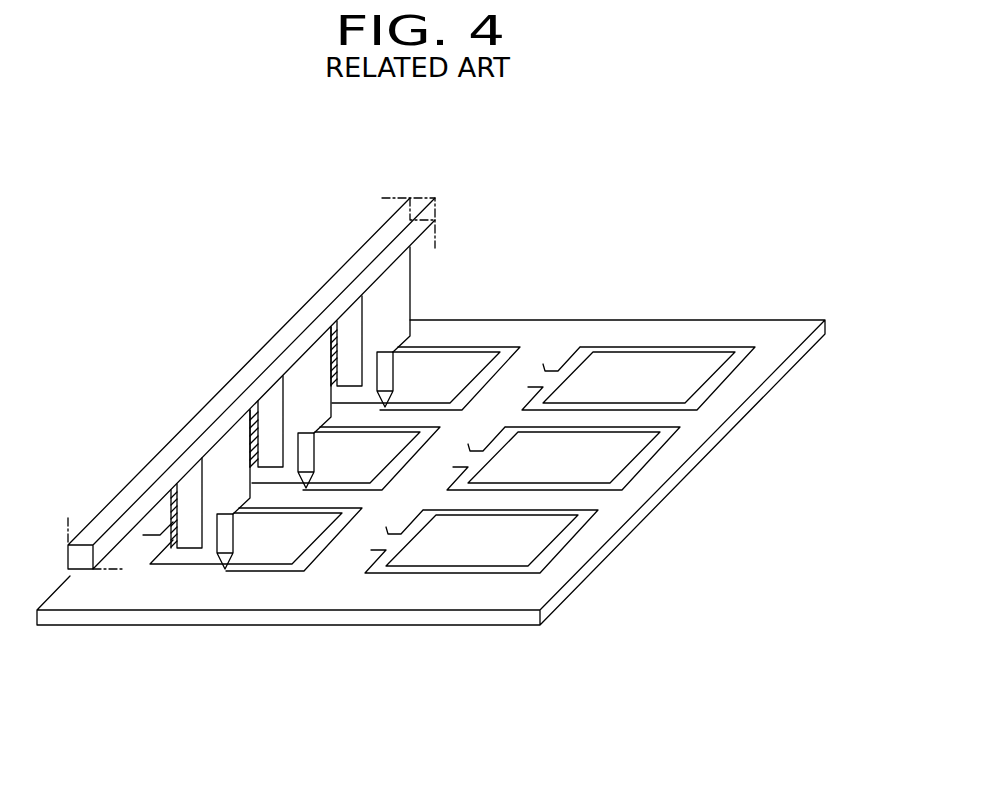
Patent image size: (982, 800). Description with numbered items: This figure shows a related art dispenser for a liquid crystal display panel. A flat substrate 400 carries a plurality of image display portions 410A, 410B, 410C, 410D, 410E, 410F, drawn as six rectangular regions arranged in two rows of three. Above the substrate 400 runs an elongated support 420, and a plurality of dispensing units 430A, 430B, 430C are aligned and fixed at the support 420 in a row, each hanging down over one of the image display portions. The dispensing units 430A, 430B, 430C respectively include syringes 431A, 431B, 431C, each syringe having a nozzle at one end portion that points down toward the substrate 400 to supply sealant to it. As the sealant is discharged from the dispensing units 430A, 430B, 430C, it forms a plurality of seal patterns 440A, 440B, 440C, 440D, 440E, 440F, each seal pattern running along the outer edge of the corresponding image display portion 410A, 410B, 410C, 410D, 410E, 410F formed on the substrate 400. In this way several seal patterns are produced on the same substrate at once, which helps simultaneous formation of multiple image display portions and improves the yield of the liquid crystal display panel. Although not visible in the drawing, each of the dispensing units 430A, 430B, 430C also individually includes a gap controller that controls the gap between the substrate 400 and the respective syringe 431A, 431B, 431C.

The substrate 400 is at (392, 626).
The support 420 is at (377, 242).
The dispensing unit 430A is at (385, 296).
The dispensing unit 430B is at (305, 377).
The dispensing unit 430C is at (225, 457).
The syringe 431A is at (376, 372).
The syringe 431B is at (297, 457).
The syringe 431C is at (216, 535).
The image display portion 410A is at (639, 377).
The image display portion 410B is at (564, 457).
The image display portion 410C is at (482, 540).
The image display portion 410D is at (416, 377).
The image display portion 410E is at (336, 457).
The image display portion 410F is at (246, 538).
The seal pattern 440A is at (730, 378).
The seal pattern 440B is at (655, 453).
The seal pattern 440C is at (572, 540).
The seal pattern 440D is at (459, 347).
The seal pattern 440E is at (418, 452).
The seal pattern 440F is at (263, 572).